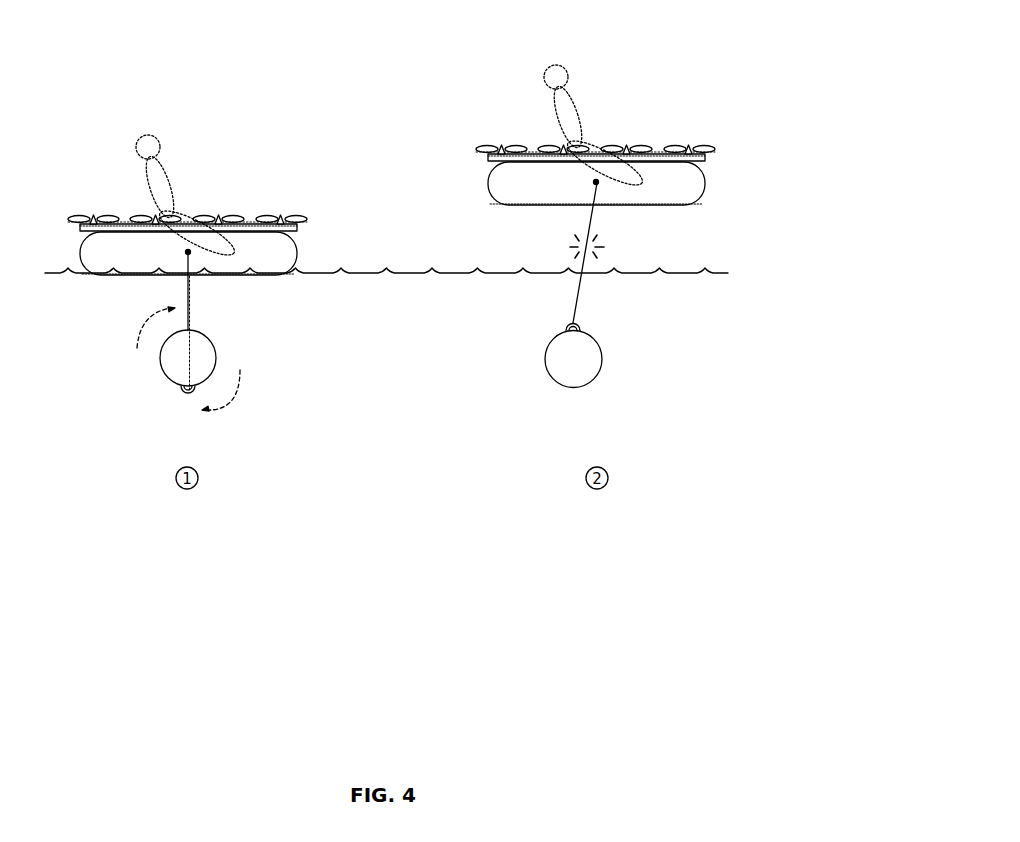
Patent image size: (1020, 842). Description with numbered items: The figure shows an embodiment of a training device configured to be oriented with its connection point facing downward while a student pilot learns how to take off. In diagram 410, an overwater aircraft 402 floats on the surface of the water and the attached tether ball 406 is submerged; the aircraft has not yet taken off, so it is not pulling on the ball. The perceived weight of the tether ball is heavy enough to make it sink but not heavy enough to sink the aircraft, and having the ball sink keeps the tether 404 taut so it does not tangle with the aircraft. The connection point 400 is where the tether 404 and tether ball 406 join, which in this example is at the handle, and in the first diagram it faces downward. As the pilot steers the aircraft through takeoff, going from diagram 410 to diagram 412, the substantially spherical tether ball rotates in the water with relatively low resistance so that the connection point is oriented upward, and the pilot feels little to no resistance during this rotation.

The connection point 400 is at (180, 397).
The overwater aircraft 402 is at (298, 247).
The tether 404 is at (190, 302).
The tether ball 406 is at (162, 358).
The diagram 410 is at (197, 121).
The diagram 412 is at (607, 55).